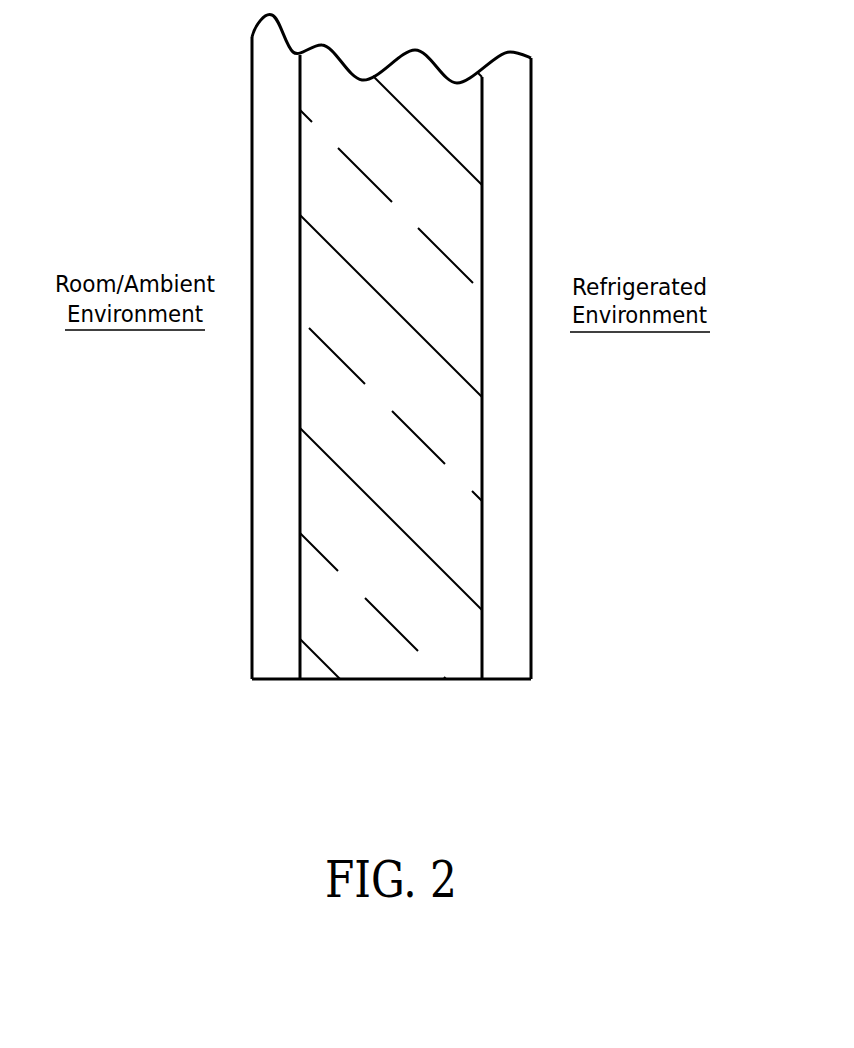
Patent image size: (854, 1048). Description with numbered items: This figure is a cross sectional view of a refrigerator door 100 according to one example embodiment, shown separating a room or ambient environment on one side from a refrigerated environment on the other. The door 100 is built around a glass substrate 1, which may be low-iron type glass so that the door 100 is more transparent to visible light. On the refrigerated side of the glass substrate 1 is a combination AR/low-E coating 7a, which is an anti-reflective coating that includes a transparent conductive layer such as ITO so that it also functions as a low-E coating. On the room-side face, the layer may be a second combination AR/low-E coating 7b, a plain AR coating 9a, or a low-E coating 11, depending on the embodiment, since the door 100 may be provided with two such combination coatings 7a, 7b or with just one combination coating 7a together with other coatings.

The refrigerator door 100 is at (378, 405).
The glass substrate 1 is at (375, 643).
The combination AR/low-E coating 7a is at (502, 563).
The combination AR/low-E coating 7b is at (181, 397).
The AR coating 9a is at (181, 397).
The low-E coating 11 is at (268, 615).